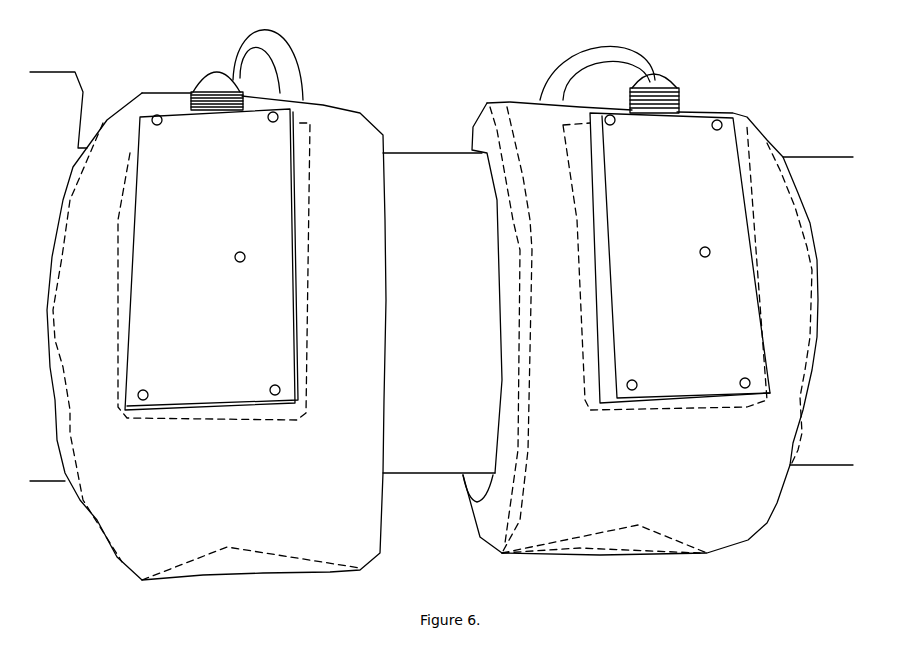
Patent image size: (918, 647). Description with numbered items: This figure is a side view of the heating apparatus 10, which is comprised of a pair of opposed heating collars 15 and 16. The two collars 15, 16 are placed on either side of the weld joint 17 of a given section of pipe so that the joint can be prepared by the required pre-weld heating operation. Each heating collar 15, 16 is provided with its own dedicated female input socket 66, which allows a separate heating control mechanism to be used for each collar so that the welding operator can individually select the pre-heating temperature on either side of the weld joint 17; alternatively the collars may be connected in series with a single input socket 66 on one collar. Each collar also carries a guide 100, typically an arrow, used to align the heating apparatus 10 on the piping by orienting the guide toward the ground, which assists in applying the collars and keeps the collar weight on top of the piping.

The heating apparatus 10 is at (275, 138).
The heating collar 15 is at (293, 527).
The heating collar 16 is at (738, 500).
The weld joint 17 is at (445, 160).
The female input socket 66 is at (202, 95).
The guide 100 is at (205, 570).